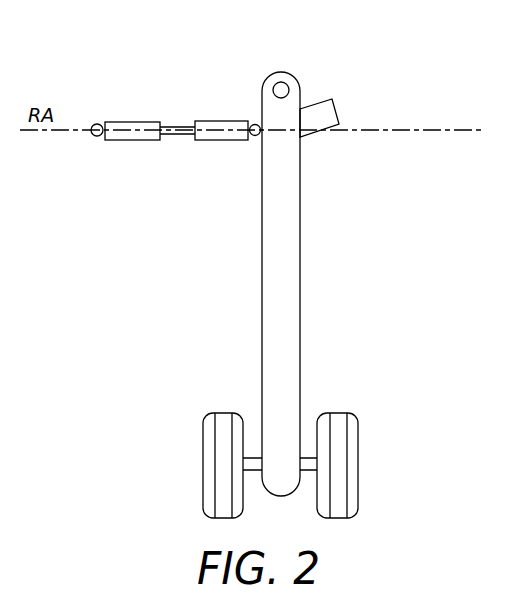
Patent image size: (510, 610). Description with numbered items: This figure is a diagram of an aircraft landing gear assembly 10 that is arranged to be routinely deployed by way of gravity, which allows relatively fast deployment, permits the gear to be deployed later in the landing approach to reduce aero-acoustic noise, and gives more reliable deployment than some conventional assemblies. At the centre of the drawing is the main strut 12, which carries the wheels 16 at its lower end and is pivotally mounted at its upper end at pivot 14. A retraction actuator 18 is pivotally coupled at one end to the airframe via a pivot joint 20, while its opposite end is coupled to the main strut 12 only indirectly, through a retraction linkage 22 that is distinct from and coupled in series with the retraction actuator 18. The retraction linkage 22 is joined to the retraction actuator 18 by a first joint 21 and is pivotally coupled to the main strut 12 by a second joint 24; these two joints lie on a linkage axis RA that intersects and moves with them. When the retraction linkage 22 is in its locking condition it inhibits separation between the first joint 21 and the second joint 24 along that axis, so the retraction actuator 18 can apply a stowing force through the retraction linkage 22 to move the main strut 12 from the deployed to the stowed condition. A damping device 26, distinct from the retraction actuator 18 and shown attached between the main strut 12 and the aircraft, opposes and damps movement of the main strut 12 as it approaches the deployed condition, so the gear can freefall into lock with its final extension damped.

The landing gear assembly 10 is at (441, 61).
The main strut 12 is at (300, 228).
The pivot 14 is at (281, 82).
The wheels 16 is at (358, 463).
The retraction actuator 18 is at (197, 113).
The pivot joint 20 is at (97, 136).
The first joint 21 is at (190, 140).
The retraction linkage 22 is at (222, 141).
The second joint 24 is at (252, 125).
The damping device 26 is at (339, 103).